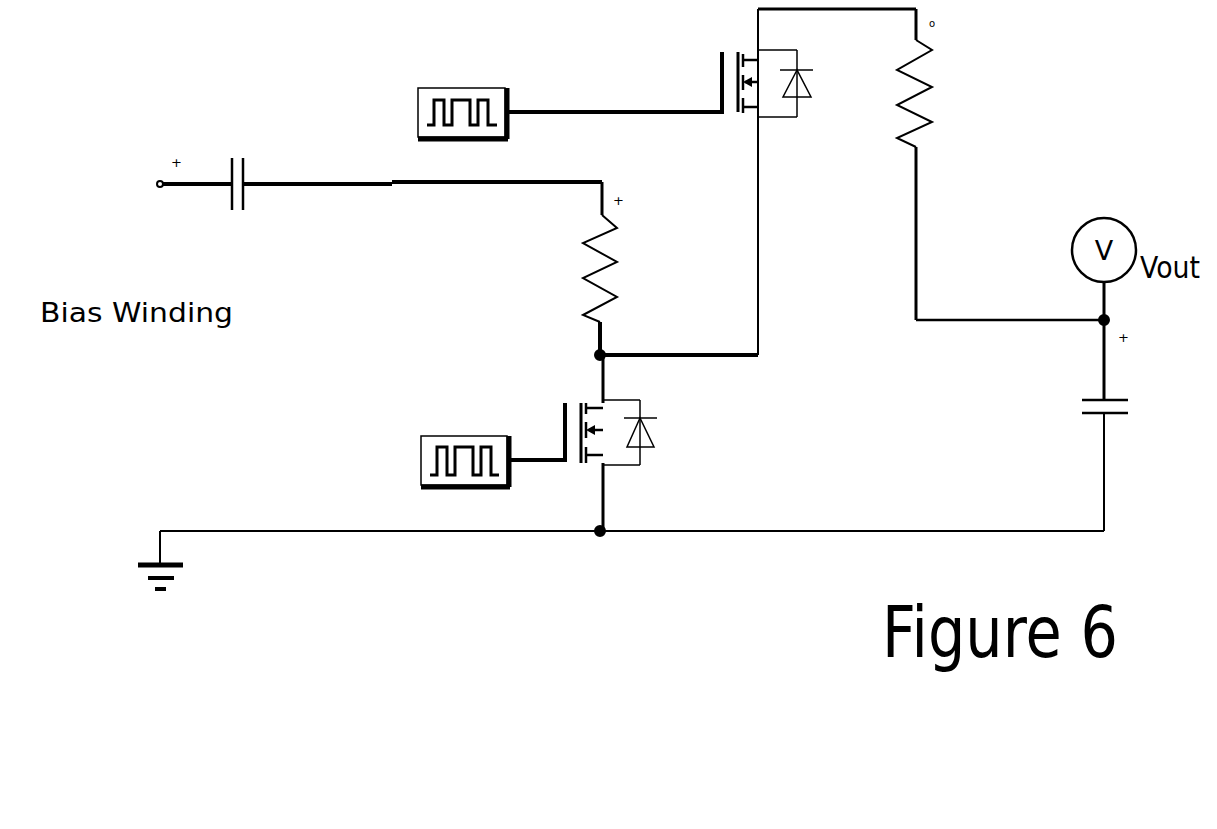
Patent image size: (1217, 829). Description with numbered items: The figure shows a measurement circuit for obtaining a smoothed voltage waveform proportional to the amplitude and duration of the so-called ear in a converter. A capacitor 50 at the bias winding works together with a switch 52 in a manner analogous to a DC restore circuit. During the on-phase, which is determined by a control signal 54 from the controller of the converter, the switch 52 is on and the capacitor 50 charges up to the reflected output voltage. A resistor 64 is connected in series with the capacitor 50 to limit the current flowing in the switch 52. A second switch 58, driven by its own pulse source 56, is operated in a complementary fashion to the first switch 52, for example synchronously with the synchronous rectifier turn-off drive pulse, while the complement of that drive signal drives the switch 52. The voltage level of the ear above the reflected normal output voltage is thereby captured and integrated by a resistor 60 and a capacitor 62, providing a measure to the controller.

The capacitor 50 is at (379, 149).
The switch 52 is at (641, 432).
The control signal 54 is at (493, 458).
The pulse drive source for switch 58 56 is at (570, 123).
The second switch 58 is at (788, 72).
The resistor 60 is at (942, 92).
The capacitor 62 is at (1127, 425).
The resistor 64 is at (623, 264).